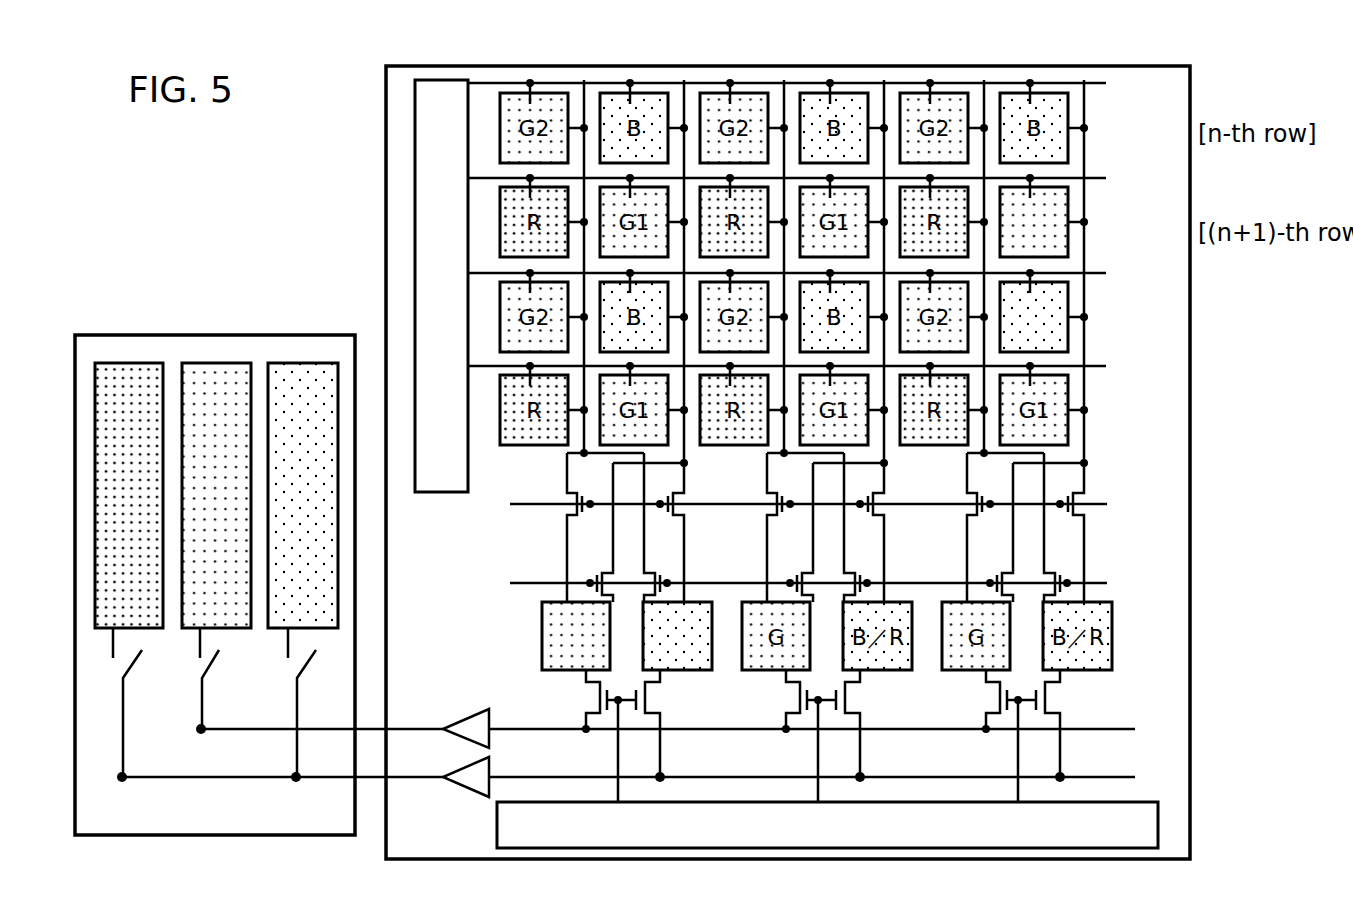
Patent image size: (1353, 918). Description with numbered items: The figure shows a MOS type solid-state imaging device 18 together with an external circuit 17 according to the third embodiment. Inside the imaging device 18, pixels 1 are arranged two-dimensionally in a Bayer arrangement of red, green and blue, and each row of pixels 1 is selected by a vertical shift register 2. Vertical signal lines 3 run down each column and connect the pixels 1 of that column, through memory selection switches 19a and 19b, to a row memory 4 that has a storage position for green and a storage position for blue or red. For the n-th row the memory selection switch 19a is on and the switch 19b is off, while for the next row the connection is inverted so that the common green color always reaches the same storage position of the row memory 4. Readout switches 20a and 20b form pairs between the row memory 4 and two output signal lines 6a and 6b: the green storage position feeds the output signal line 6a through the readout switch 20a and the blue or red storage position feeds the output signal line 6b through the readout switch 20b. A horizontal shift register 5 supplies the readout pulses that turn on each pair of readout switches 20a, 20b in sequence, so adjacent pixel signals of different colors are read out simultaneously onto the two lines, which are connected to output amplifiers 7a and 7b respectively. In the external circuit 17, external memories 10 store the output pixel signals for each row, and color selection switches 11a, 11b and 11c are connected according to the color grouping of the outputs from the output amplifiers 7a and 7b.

The pixel 1 is at (1068, 245).
The vertical shift register 2 is at (423, 152).
The vertical signal line 3 is at (1085, 393).
The row memory 4 is at (543, 640).
The horizontal shift register 5 is at (1152, 820).
The output signal line 6a is at (1092, 728).
The output signal line 6b is at (1092, 777).
The output amplifier 7a is at (465, 713).
The output amplifier 7b is at (466, 790).
The external memory 10 is at (312, 362).
The color selection switch 11a is at (210, 662).
The color selection switch 11b is at (317, 705).
The color selection switch 11c is at (138, 668).
The external circuit 17 is at (86, 333).
The MOS type solid-state imaging device 18 is at (1190, 660).
The memory selection switch 19a is at (558, 513).
The memory selection switch 19b is at (587, 573).
The readout switch 20a is at (592, 697).
The readout switch 20b is at (652, 698).